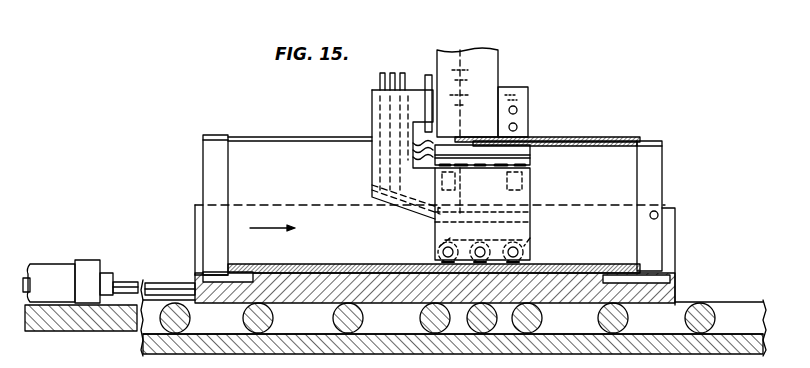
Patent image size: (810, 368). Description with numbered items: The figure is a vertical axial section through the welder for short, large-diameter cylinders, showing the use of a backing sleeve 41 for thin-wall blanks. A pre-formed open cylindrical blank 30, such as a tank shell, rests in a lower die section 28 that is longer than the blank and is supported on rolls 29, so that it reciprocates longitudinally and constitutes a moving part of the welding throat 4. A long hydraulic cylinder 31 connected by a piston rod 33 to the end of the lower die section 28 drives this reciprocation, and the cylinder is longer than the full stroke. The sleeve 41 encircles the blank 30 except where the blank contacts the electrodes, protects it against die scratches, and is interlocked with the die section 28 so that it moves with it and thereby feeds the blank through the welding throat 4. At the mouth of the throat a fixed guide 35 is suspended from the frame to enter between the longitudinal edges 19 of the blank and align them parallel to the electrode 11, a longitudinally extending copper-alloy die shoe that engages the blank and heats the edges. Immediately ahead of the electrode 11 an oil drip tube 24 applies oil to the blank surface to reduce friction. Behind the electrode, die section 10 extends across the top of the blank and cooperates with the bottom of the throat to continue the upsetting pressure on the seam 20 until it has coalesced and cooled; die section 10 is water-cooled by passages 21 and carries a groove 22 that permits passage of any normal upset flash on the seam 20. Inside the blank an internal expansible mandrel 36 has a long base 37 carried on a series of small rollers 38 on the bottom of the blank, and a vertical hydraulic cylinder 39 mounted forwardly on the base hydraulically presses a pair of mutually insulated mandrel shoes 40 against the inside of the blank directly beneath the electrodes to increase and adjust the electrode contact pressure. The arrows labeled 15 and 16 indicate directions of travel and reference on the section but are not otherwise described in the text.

The welding throat 4 is at (488, 117).
The die section 10 is at (526, 90).
The electrode 11 is at (492, 62).
The marker 15 is at (425, 258).
The direction arrow 16 is at (458, 43).
The longitudinal edges 19 is at (320, 137).
The seam 20 is at (596, 141).
The passages 21 is at (518, 109).
The groove 22 is at (528, 137).
The oil drip tube 24 is at (428, 75).
The lower die section 28 is at (314, 302).
The rolls 29 is at (192, 322).
The blank 30 is at (275, 144).
The hydraulic cylinder 31 is at (60, 262).
The piston rod 33 is at (122, 280).
The fixed guide 35 is at (372, 176).
The internal expansible mandrel 36 is at (530, 220).
The mandrel base 37 is at (530, 245).
The small rollers 38 is at (498, 249).
The vertical hydraulic cylinder 39 is at (530, 193).
The mandrel shoes 40 is at (528, 152).
The sleeve 41 is at (210, 157).